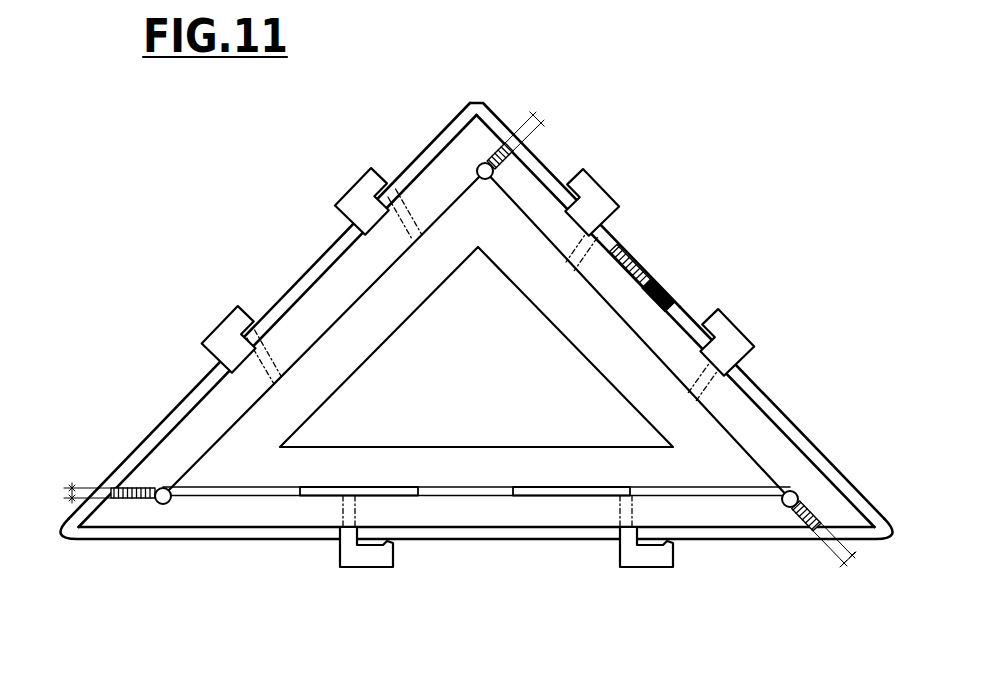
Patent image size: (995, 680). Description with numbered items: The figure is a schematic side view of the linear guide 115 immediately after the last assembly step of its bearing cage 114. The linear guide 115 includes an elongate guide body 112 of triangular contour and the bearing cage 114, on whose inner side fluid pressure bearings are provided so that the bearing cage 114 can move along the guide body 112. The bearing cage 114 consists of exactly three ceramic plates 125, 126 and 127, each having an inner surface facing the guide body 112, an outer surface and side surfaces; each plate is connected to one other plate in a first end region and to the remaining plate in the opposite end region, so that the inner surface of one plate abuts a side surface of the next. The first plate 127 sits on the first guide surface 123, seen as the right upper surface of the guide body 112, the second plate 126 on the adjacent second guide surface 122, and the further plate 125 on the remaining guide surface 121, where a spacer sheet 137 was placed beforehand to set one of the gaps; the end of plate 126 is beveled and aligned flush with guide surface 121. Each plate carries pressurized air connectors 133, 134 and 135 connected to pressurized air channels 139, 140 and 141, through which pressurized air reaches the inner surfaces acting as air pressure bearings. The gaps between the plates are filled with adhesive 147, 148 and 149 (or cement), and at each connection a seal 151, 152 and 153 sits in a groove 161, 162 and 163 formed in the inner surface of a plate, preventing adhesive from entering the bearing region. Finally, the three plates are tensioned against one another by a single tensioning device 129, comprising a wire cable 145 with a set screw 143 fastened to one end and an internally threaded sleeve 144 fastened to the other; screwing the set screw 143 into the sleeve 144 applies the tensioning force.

The linear guide 115 is at (612, 66).
The elongate guide body 112 is at (445, 462).
The bearing cage 114 is at (547, 515).
The guide surface 121 is at (742, 497).
The second guide surface 122 is at (330, 305).
The first guide surface 123 is at (603, 298).
The plate 125 is at (312, 513).
The plate 126 is at (350, 268).
The plate 127 is at (529, 186).
The tensioning device 129 is at (830, 420).
The pressurized air connector 133 is at (361, 568).
The pressurized air connector 134 is at (347, 187).
The pressurized air connector 135 is at (607, 185).
The spacer sheet 137 is at (549, 487).
The pressurized air channel 139 is at (335, 505).
The pressurized air channel 140 is at (426, 242).
The pressurized air channel 141 is at (582, 268).
The set screw 143 is at (631, 262).
The internally threaded sleeve 144 is at (672, 298).
The wire cable 145 is at (214, 534).
The adhesive 147 is at (795, 508).
The adhesive 148 is at (148, 489).
The adhesive 149 is at (489, 143).
The seal 151 is at (794, 491).
The seal 152 is at (168, 489).
The seal 153 is at (477, 171).
The groove 161 is at (161, 503).
The groove 162 is at (478, 163).
The groove 163 is at (806, 506).